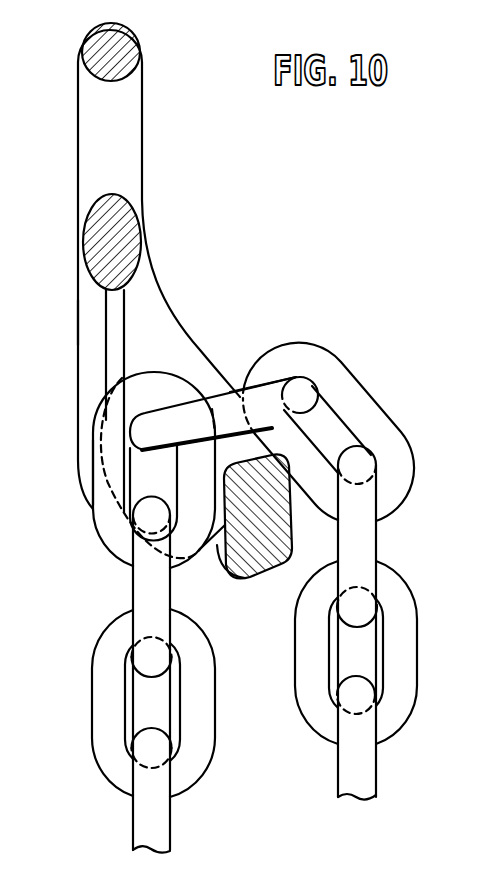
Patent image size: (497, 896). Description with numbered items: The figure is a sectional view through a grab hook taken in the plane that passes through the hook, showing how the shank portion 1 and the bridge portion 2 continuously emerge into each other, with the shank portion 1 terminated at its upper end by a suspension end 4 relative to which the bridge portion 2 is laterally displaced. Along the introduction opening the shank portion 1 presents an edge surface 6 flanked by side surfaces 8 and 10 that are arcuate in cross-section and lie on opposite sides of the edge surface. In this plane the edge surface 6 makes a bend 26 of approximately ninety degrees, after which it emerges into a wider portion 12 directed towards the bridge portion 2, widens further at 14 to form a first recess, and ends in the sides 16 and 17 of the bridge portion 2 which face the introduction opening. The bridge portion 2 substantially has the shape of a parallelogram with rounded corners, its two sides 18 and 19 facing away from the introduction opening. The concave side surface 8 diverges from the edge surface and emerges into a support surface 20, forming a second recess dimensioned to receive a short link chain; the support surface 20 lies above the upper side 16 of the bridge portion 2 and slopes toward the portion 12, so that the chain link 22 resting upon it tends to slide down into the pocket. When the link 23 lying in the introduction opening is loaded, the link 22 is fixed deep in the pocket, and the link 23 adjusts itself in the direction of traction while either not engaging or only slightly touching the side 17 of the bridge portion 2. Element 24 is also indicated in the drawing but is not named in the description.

The shank portion 1 is at (78, 300).
The bridge portion 2 is at (277, 527).
The suspension end 4 is at (120, 133).
The edge surface 6 is at (110, 350).
The side surface 8 is at (150, 312).
The side surface 10 is at (85, 320).
The wider portion 12 is at (137, 470).
The widened portion 14 is at (225, 467).
The upper side of bridge portion 16 is at (272, 428).
The side of bridge portion 17 is at (228, 580).
The side of bridge portion 18 is at (260, 582).
The side of bridge portion 19 is at (300, 538).
The support surface 20 is at (232, 458).
The chain link 22 is at (300, 393).
The link 23 is at (100, 468).
The connecting link 24 is at (405, 457).
The bend 26 is at (113, 420).